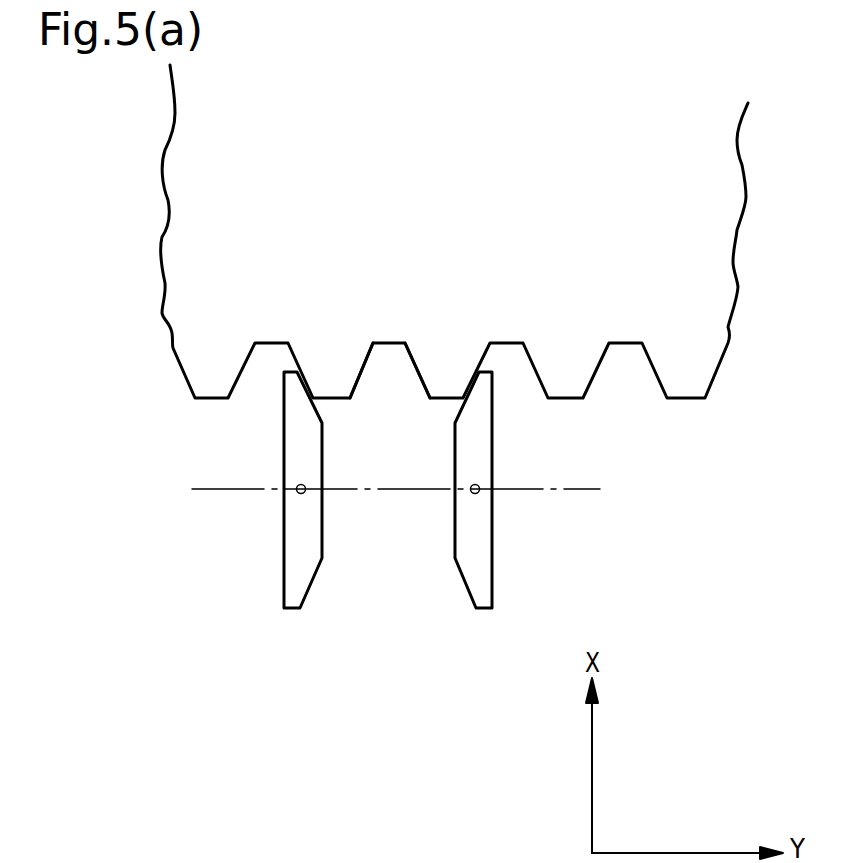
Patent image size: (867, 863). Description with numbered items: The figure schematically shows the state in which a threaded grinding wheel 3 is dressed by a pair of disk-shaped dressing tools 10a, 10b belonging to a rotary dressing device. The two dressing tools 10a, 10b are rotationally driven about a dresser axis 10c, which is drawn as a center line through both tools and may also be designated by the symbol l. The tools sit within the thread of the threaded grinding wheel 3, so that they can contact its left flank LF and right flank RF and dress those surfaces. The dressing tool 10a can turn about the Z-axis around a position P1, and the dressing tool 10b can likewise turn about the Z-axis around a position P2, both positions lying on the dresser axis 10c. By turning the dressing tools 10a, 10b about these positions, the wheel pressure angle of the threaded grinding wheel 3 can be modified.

The threaded grinding wheel 3 is at (653, 287).
The dressing tool 10a is at (293, 603).
The dressing tool 10b is at (476, 603).
The dresser axis 10c is at (441, 490).
The position P1 is at (301, 494).
The position P2 is at (475, 494).
The left flank LF is at (365, 375).
The right flank RF is at (422, 375).